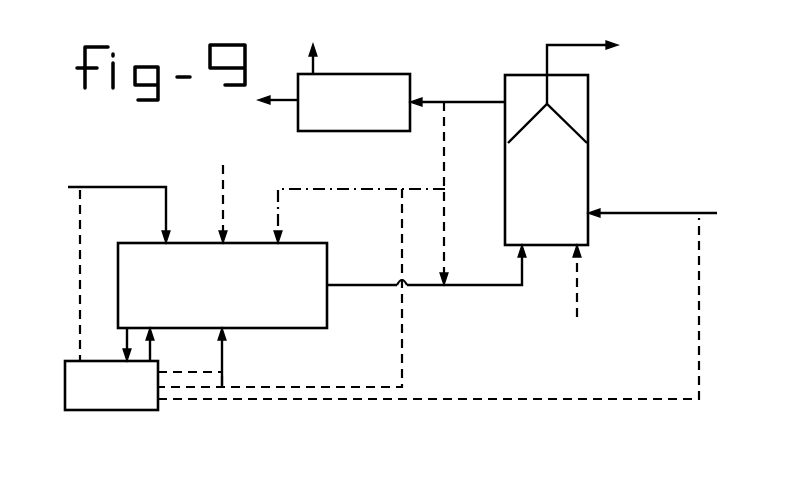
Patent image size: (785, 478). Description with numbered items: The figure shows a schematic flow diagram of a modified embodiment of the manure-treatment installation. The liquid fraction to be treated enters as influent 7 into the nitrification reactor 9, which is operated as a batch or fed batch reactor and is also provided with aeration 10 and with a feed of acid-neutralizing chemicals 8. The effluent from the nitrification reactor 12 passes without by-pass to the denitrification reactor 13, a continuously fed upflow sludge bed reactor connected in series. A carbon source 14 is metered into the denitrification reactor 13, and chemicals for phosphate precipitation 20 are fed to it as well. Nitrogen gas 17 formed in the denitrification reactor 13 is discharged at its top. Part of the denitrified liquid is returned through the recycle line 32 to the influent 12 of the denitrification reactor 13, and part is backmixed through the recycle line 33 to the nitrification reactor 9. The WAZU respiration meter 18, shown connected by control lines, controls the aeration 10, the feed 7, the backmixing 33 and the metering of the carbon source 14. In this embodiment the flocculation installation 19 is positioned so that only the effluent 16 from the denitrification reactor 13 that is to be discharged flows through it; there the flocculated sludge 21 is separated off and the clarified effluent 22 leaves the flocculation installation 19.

The influent 7 is at (147, 187).
The feed of acid-neutralizing chemicals 8 is at (225, 178).
The nitrification reactor 9 is at (300, 268).
The aeration 10 is at (225, 363).
The effluent from the nitrification reactor 12 is at (463, 287).
The denitrification reactor 13 is at (578, 165).
The source of carbon 14 is at (624, 213).
The effluent from the denitrification reactor 16 is at (466, 101).
The nitrogen gas discharge 17 is at (592, 45).
The WAZU respiration meter 18 is at (80, 377).
The flocculation installation 19 is at (372, 88).
The feed of chemicals for phosphate precipitation 20 is at (577, 292).
The sludge, flocculated material 21 is at (313, 62).
The effluent from the flocculation installation 22 is at (262, 104).
The recycle line to the denitrification reactor 32 is at (445, 163).
The recycle line to the nitrification reactor 33 is at (367, 187).